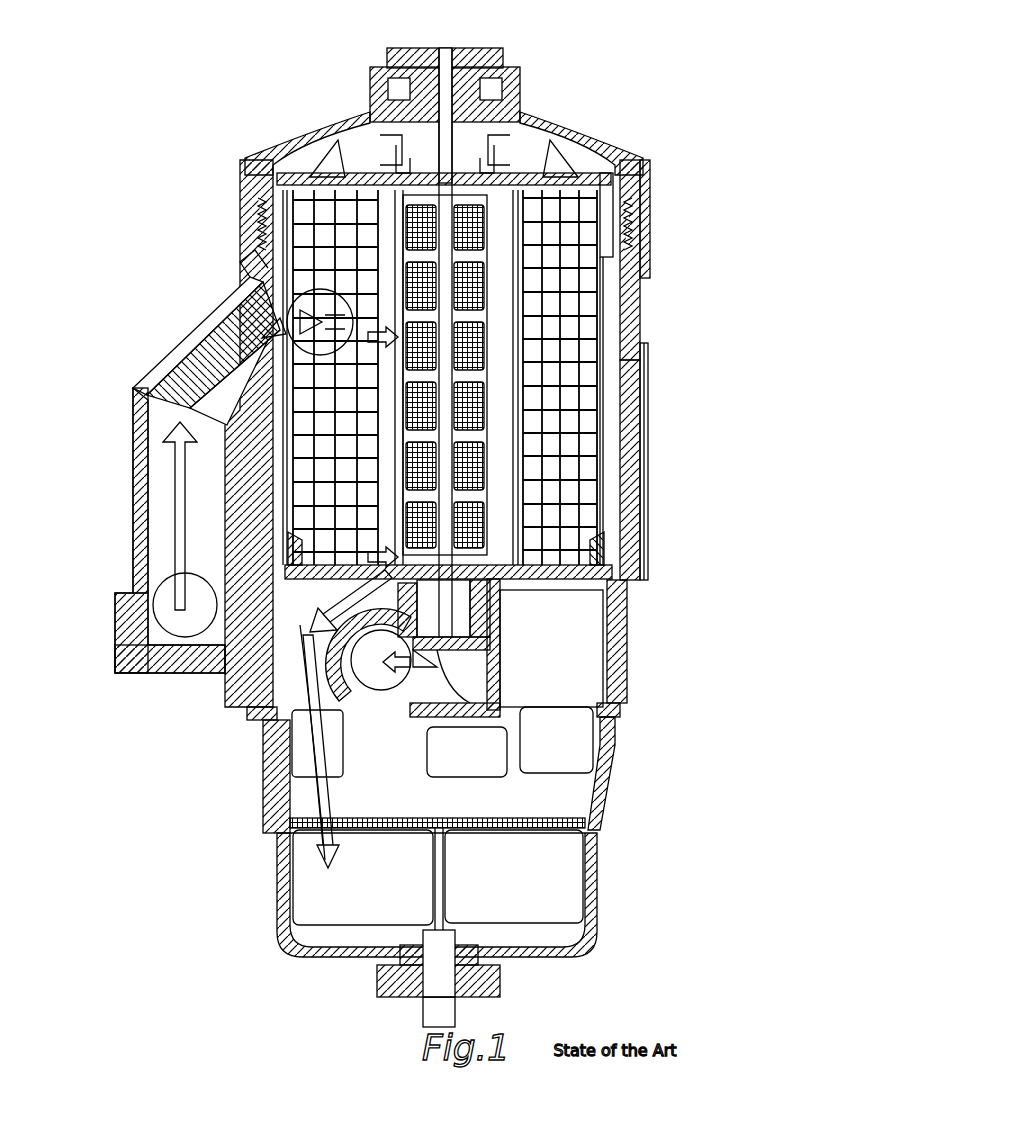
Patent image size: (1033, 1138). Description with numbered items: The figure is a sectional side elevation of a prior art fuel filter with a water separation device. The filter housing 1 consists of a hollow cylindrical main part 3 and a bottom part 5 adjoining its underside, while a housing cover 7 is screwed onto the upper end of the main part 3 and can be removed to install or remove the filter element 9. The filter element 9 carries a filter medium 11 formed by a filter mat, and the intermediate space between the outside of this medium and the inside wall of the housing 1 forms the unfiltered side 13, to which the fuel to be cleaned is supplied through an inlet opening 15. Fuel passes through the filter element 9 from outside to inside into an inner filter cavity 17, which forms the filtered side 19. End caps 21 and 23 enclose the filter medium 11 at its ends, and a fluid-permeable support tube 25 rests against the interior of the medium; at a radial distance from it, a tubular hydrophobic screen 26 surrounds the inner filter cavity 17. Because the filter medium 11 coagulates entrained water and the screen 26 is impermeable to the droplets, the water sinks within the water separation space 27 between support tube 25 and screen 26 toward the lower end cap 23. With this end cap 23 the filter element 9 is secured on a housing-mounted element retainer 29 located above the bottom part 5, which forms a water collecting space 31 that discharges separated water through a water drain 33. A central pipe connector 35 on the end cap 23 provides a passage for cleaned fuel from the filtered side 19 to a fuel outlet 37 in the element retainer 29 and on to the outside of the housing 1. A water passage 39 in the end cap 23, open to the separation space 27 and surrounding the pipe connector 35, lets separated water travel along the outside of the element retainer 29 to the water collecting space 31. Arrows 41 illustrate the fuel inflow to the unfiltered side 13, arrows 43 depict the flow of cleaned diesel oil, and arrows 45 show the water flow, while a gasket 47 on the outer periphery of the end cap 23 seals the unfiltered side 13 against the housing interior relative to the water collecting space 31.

The filter housing 1 is at (466, 420).
The hollow cylindrical main part 3 is at (627, 480).
The bottom part 5 is at (597, 847).
The housing cover 7 is at (593, 130).
The filter element 9 is at (540, 338).
The filter medium 11 is at (333, 217).
The unfiltered side 13 is at (645, 343).
The inlet opening 15 is at (262, 312).
The inner filter cavity 17 is at (480, 243).
The filtered side 19 is at (530, 600).
The end cap 21 is at (545, 180).
The end cap 23 is at (593, 547).
The support tube 25 is at (520, 443).
The hydrophobic screen 26 is at (440, 305).
The water separation space 27 is at (497, 513).
The element retainer 29 is at (540, 675).
The water collecting space 31 is at (570, 880).
The water drain 33 is at (470, 1000).
The central pipe connector 35 is at (530, 632).
The fuel outlet 37 is at (263, 710).
The water passage 39 is at (545, 585).
The arrows 41 is at (227, 373).
The arrows 43 is at (490, 373).
The arrows 45 is at (400, 457).
The gasket 47 is at (610, 557).